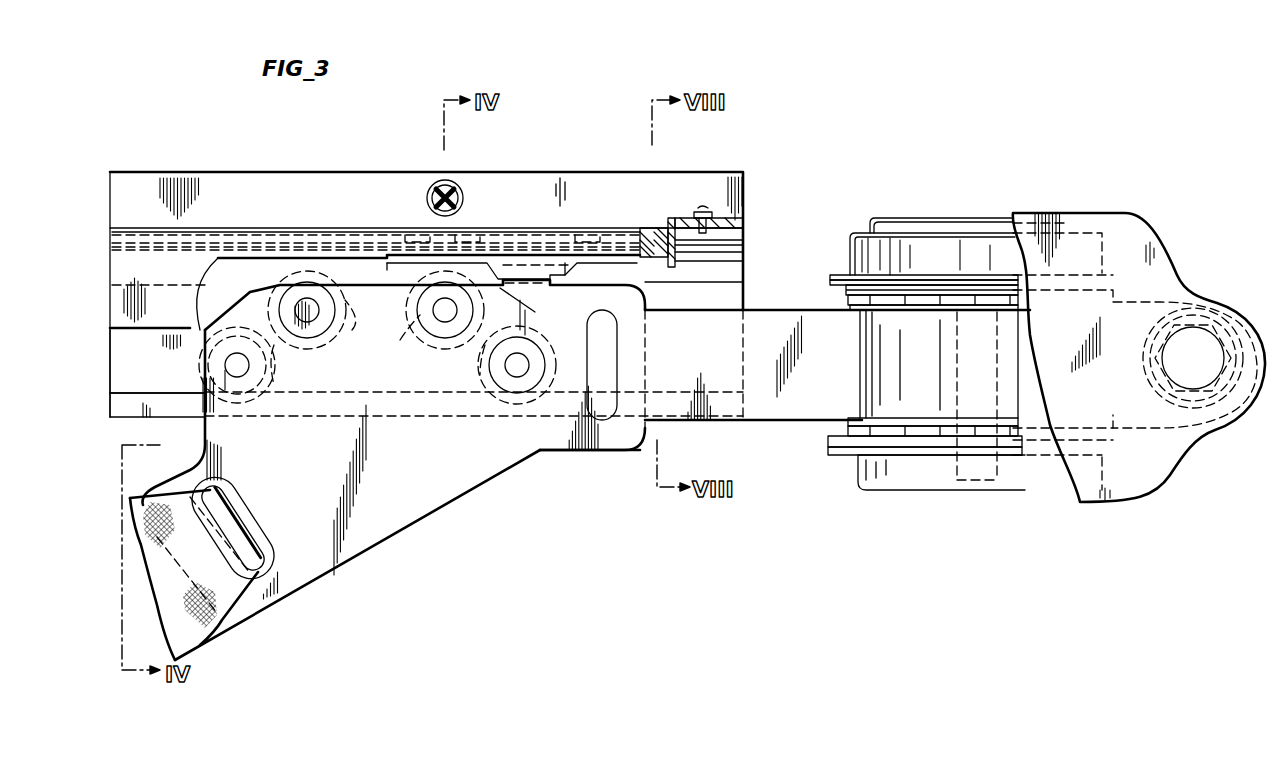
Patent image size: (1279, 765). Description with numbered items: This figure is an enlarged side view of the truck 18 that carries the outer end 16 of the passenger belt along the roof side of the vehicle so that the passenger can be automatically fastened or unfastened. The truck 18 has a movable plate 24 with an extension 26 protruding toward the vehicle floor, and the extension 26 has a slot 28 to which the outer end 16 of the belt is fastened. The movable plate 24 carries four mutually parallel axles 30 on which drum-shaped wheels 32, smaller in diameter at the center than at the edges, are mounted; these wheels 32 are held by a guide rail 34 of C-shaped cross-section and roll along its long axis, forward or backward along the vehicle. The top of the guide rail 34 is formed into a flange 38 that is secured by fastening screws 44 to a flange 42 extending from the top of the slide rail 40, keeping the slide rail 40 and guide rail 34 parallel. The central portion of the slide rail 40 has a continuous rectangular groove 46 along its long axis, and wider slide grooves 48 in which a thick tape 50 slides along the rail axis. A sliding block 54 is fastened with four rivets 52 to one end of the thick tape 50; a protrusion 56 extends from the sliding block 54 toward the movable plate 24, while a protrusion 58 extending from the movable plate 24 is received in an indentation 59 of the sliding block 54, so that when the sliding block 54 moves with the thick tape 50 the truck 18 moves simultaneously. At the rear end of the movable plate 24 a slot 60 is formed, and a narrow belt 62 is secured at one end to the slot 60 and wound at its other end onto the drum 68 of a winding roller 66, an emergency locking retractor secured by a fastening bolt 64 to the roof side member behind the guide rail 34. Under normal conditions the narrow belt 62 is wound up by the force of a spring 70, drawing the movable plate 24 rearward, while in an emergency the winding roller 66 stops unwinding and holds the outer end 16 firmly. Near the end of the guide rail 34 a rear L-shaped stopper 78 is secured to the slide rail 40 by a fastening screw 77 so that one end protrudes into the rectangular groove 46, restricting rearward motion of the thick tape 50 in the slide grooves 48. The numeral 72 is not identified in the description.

The outer end of the belt 16 is at (204, 626).
The truck 18 is at (430, 520).
The movable plate 24 is at (553, 452).
The extension 26 is at (330, 577).
The slot 28 is at (243, 518).
The axles 30 is at (232, 364).
The drum-shaped wheels 32 is at (272, 374).
The guide rail 34 is at (152, 392).
The flange 38 is at (562, 188).
The slide rail 40 is at (236, 228).
The flange 42 is at (305, 176).
The fastening screws 44 is at (458, 190).
The rectangular groove 46 is at (740, 238).
The slide grooves 48 is at (712, 252).
The thick tape 50 is at (326, 243).
The rivets 52 is at (572, 232).
The sliding block 54 is at (636, 262).
The protrusion 56 is at (566, 280).
The protrusion 58 is at (496, 283).
The indentation 59 is at (540, 280).
The slot 60 is at (602, 352).
The narrow belt 62 is at (703, 420).
The fastening bolt 64 is at (1175, 352).
The winding roller 66 is at (876, 346).
The drum 68 is at (990, 370).
The spring 70 is at (1025, 492).
The housing wall 72 is at (146, 330).
The fastening screw 77 is at (710, 206).
The L-shaped stopper 78 is at (676, 218).